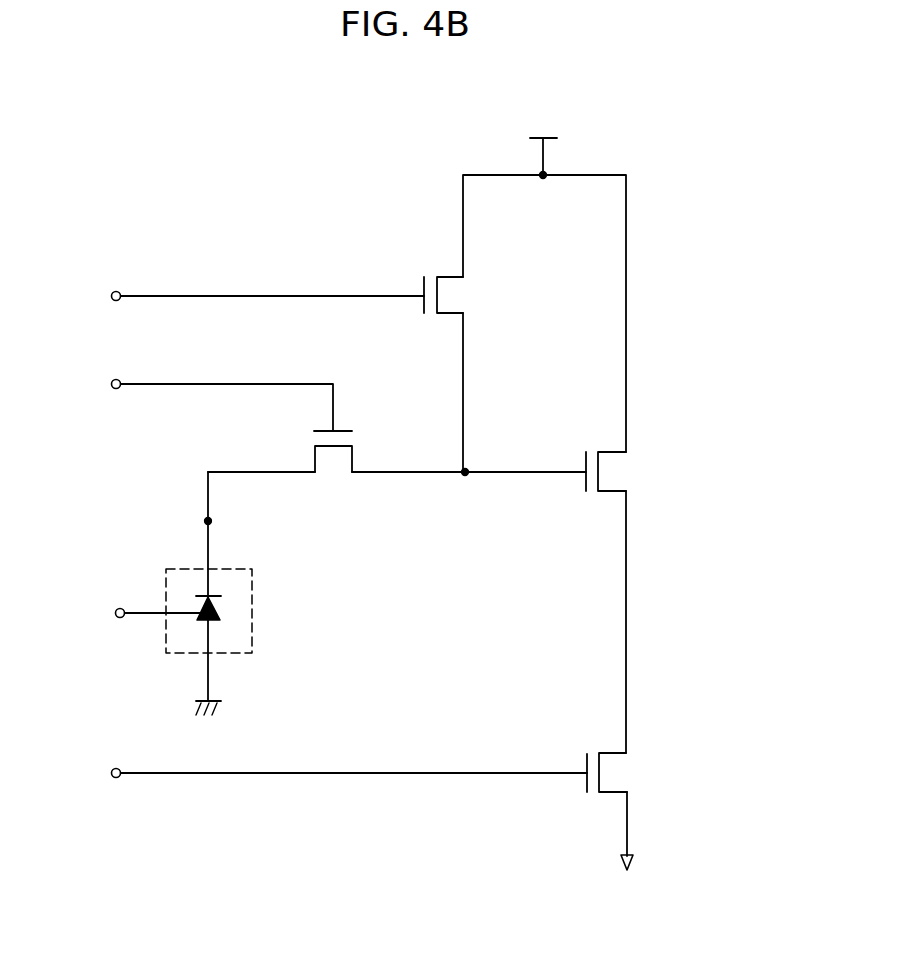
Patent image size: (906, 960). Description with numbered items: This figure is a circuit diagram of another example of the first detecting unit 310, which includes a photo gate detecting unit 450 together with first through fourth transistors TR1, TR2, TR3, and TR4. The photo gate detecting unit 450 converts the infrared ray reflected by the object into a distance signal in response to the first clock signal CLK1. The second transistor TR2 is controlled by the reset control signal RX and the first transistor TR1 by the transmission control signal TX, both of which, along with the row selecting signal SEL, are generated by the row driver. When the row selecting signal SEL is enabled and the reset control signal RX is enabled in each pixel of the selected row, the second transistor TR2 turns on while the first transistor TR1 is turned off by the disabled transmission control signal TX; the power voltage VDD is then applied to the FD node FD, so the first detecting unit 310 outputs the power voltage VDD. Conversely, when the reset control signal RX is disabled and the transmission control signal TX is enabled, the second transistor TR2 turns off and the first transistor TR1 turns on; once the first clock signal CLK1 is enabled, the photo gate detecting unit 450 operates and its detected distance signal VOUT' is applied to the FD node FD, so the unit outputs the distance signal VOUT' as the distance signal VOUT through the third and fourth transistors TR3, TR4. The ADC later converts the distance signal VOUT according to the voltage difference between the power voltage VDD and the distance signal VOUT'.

The first detecting unit 310 is at (706, 173).
The photo gate detecting unit 450 is at (252, 610).
The first transistor TR1 is at (333, 467).
The second transistor TR2 is at (466, 295).
The third transistor TR3 is at (628, 471).
The fourth transistor TR4 is at (629, 772).
The FD node FD is at (466, 487).
The power voltage VDD is at (543, 144).
The reset control signal RX is at (250, 296).
The transmission control signal TX is at (204, 402).
The row selecting signal SEL is at (327, 773).
The first clock signal CLK1 is at (132, 613).
The distance signal VOUT is at (630, 847).
The distance signal detected by the photo gate detecting unit VOUT' is at (243, 521).